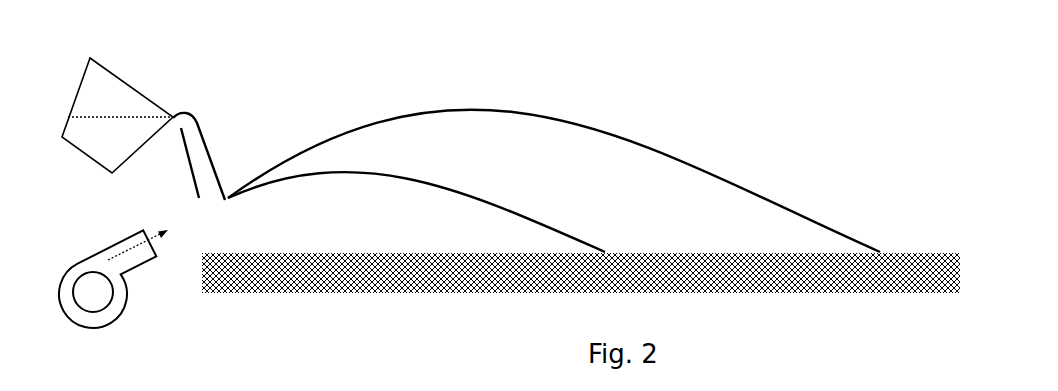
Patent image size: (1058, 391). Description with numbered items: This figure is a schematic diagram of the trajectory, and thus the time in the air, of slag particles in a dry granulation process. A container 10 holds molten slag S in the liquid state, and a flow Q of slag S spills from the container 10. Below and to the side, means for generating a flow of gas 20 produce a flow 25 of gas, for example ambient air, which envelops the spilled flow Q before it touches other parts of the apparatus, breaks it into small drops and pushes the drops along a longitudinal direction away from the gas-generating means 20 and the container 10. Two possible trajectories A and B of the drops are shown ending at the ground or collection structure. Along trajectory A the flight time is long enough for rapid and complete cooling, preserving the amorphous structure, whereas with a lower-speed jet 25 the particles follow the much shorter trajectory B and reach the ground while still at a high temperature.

The container 10 is at (123, 80).
The means for generating a flow of gas 20 is at (112, 323).
The flow of gas 25 is at (120, 242).
The flow of slag Q is at (200, 122).
The trajectory A is at (554, 178).
The trajectory B is at (416, 212).
The molten slag S is at (106, 138).